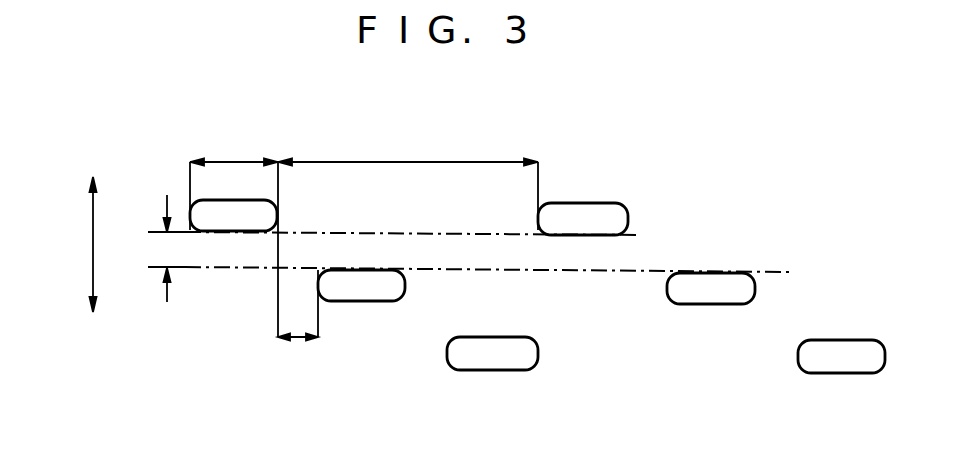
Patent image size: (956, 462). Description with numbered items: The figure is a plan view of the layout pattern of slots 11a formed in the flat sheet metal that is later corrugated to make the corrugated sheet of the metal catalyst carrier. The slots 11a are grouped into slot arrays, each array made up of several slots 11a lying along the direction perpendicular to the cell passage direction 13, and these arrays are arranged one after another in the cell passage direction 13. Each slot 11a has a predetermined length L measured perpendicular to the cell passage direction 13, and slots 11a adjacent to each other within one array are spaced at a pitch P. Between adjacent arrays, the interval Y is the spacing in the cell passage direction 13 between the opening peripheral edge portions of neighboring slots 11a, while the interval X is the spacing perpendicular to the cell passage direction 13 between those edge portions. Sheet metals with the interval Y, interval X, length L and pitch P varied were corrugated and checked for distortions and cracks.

The slots 11a is at (565, 220).
The cell passage direction 13 is at (92, 246).
The length L is at (234, 179).
The pitch P is at (408, 235).
The interval X is at (298, 321).
The interval Y is at (158, 248).